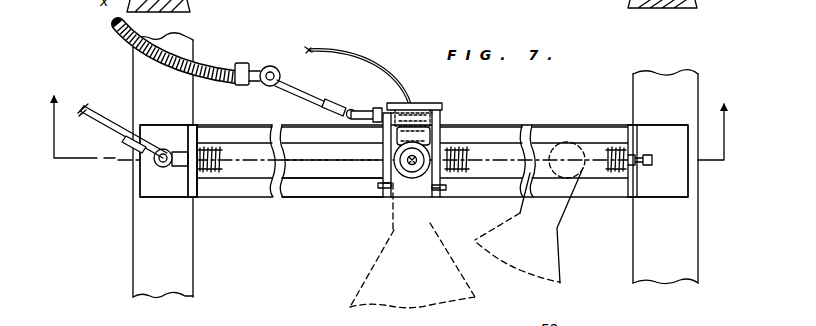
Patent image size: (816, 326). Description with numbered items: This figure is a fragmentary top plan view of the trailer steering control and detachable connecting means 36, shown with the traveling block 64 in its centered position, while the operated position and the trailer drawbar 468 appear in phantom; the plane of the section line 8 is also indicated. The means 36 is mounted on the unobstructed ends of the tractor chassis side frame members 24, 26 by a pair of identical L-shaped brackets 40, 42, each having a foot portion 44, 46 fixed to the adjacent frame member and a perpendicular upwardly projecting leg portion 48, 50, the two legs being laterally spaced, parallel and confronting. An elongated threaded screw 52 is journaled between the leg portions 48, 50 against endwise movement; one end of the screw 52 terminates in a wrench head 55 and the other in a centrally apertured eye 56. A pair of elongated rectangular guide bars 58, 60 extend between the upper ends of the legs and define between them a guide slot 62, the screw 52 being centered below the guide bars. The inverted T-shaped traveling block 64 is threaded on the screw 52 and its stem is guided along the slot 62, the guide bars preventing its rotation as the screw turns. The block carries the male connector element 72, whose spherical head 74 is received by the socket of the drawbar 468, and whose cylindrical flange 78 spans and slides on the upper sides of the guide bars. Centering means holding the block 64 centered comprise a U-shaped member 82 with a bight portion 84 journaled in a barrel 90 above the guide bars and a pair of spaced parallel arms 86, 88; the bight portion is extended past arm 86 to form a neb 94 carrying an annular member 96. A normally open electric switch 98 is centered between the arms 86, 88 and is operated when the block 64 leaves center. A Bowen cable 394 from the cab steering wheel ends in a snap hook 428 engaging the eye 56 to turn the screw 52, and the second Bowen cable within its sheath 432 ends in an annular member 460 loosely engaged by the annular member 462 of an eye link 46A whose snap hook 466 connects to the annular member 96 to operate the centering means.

The section line 8- 8 is at (389, 128).
The tractor chassis side frame member 24 is at (698, 92).
The tractor chassis side frame member 26 is at (133, 265).
The trailer steering control and detachable connecting means 36 is at (492, 124).
The L-shaped bracket 40 is at (665, 203).
The L-shaped bracket 42 is at (161, 204).
The foot portion 44 is at (688, 186).
The foot portion 46 is at (143, 195).
The actuating rod 46A is at (304, 93).
The leg portion 48 is at (633, 193).
The leg portion 50 is at (200, 199).
The threaded screw 52 is at (343, 163).
The wrench head 55 is at (648, 155).
The centrally-apertured eye 56 is at (166, 169).
The guide bar 58 is at (255, 111).
The guide bar 60 is at (256, 200).
The guide slot 62 is at (312, 178).
The traveling block 64 is at (442, 147).
The male connector element 72 is at (387, 147).
The spherical head 74 is at (409, 176).
The cylindrical flange 78 is at (416, 176).
The U-shaped member 82 is at (476, 108).
The bight portion 84 is at (405, 103).
The arm 86 is at (386, 187).
The arm 88 is at (437, 198).
The barrel 90 is at (431, 118).
The neb 94 is at (376, 111).
The annular member 96 is at (357, 110).
The electric switch 98 is at (421, 108).
The Bowen cable 394 is at (112, 100).
The snap hook 428 is at (152, 164).
The sheath 432 is at (125, 41).
The annular member 460 is at (270, 64).
The annular member 462 is at (278, 66).
The snap hook 466 is at (333, 116).
The drawbar 468 is at (398, 205).